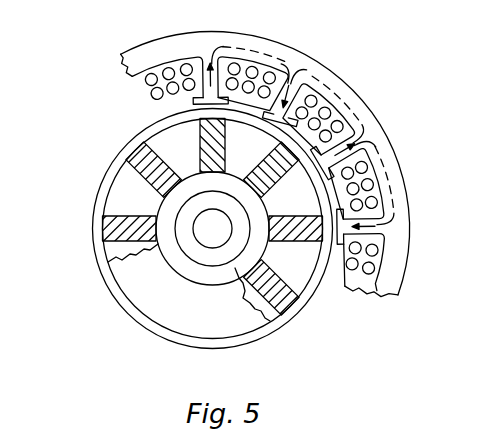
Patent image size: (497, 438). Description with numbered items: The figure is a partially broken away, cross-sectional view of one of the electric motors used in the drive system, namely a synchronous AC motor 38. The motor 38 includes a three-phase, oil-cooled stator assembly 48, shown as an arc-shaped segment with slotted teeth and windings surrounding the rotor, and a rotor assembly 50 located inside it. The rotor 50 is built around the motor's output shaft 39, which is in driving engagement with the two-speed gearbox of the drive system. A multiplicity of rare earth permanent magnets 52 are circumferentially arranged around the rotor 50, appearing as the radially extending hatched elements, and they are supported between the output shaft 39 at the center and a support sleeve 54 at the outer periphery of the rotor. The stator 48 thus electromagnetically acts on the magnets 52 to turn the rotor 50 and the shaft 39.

The synchronous AC motor 38 is at (372, 94).
The output shaft 39 is at (203, 248).
The stator assembly 48 is at (321, 63).
The rotor assembly 50 is at (100, 176).
The rare earth permanent magnets 52 is at (200, 140).
The support sleeve 54 is at (94, 245).